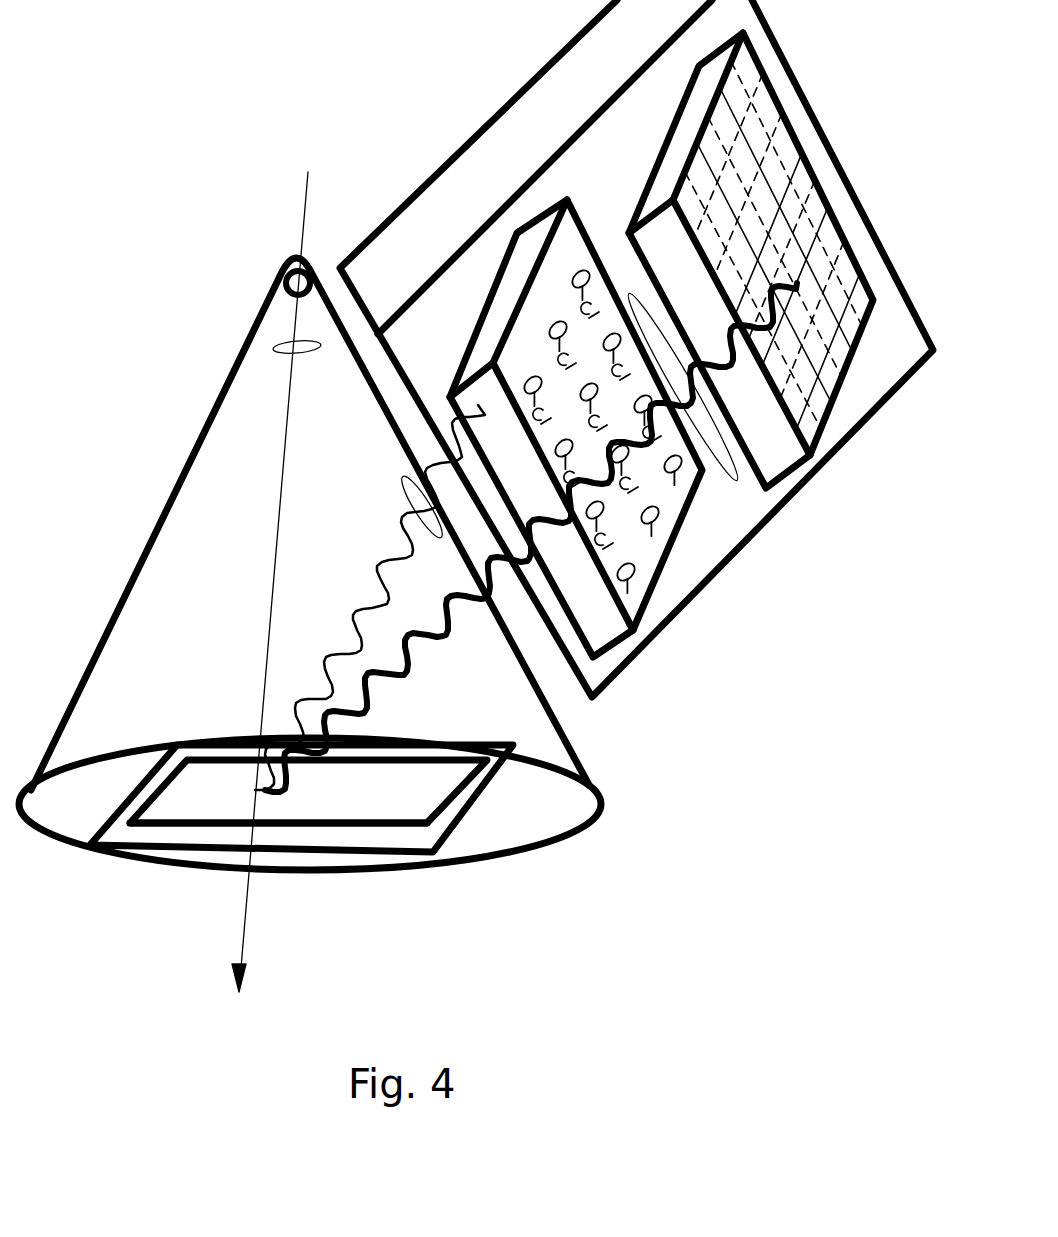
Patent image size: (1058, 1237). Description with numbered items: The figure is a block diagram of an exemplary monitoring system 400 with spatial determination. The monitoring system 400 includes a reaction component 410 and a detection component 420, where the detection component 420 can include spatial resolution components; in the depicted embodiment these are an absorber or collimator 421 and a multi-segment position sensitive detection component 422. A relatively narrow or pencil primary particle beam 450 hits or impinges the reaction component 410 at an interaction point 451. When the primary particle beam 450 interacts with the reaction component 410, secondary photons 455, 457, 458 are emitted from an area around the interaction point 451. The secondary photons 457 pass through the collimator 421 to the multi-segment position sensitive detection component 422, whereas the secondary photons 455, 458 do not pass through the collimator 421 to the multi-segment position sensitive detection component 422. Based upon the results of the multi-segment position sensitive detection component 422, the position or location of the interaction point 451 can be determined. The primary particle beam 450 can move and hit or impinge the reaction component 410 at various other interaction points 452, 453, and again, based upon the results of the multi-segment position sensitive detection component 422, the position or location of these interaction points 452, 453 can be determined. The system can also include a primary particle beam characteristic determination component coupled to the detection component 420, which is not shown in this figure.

The monitoring system 400 is at (108, 27).
The reaction component 410 is at (480, 812).
The detection component 420 is at (563, 137).
The collimator 421 is at (497, 280).
The multi-segment position sensitive detection component 422 is at (660, 143).
The primary particle beam 450 is at (240, 350).
The interaction point 451 is at (258, 752).
The interaction point 452 is at (387, 782).
The interaction point 453 is at (417, 812).
The secondary photons 455 is at (407, 478).
The secondary photons 457 is at (740, 483).
The secondary photons 458 is at (483, 603).